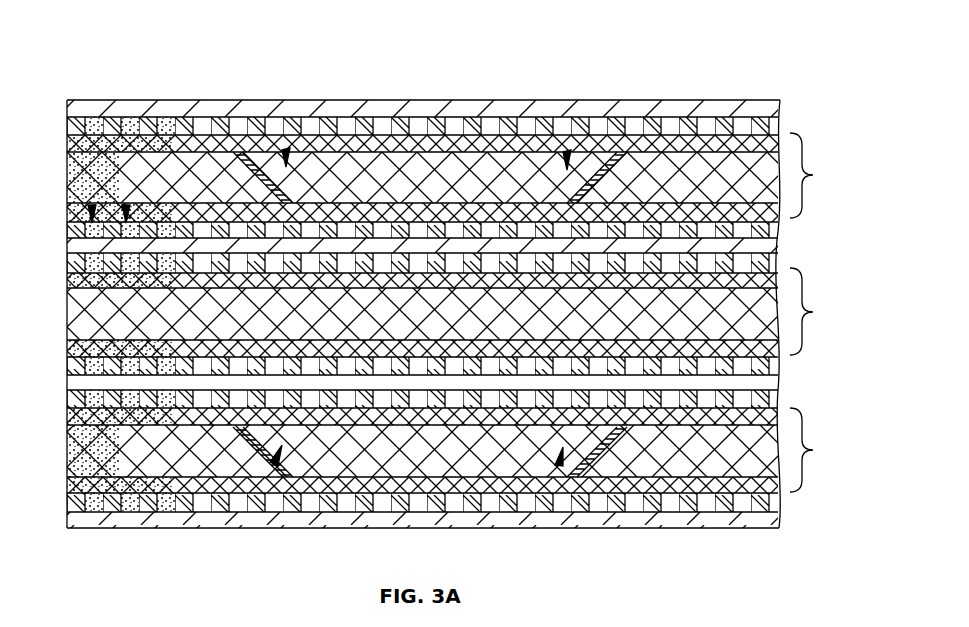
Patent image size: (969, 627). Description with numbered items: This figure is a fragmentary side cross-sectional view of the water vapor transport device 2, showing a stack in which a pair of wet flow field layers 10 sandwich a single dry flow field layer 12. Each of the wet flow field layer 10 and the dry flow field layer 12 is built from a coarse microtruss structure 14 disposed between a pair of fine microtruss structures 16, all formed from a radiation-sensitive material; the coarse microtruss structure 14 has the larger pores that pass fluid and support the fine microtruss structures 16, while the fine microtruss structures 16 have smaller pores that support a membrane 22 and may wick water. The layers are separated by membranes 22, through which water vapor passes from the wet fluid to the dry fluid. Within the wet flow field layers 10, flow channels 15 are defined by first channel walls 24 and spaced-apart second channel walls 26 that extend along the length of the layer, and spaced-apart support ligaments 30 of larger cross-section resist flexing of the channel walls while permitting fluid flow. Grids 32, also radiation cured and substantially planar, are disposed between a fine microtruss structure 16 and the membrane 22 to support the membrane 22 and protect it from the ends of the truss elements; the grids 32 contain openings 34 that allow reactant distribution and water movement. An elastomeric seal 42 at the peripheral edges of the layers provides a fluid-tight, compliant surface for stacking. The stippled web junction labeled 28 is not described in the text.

The water vapor transport device 2 is at (742, 72).
The wet flow field layer 10 is at (819, 312).
The dry flow field layer 12 is at (817, 311).
The coarse microtruss structure 14 is at (480, 150).
The flow channels 15 is at (286, 150).
The fine microtruss structure 16 is at (67, 280).
The membrane 22 is at (65, 108).
The first channel walls 24 is at (280, 158).
The second channel walls 26 is at (622, 165).
The web connection 28 is at (245, 160).
The support ligaments 30 is at (371, 166).
The grids 32 is at (67, 124).
The openings 34 is at (72, 176).
The seal 42 is at (140, 118).